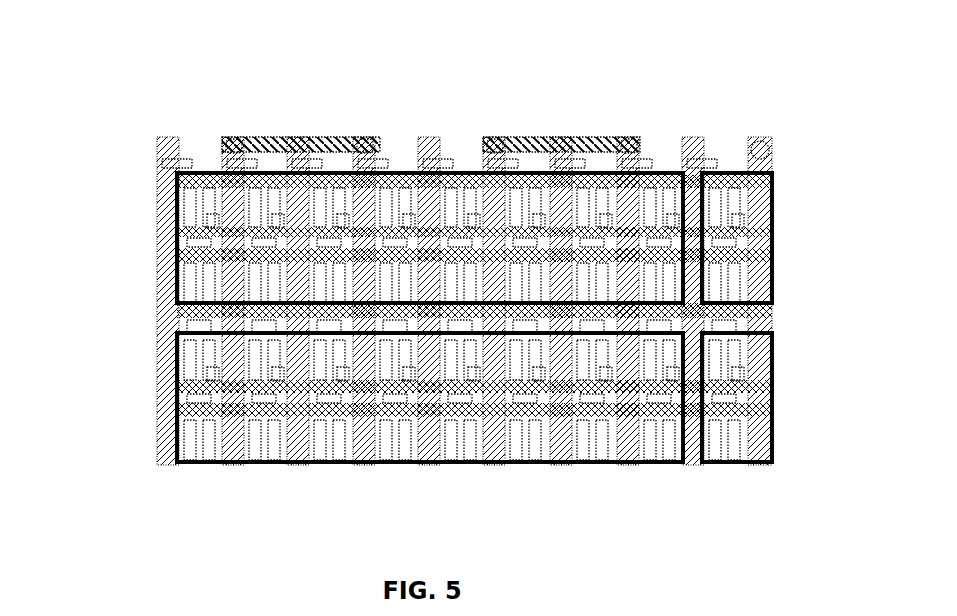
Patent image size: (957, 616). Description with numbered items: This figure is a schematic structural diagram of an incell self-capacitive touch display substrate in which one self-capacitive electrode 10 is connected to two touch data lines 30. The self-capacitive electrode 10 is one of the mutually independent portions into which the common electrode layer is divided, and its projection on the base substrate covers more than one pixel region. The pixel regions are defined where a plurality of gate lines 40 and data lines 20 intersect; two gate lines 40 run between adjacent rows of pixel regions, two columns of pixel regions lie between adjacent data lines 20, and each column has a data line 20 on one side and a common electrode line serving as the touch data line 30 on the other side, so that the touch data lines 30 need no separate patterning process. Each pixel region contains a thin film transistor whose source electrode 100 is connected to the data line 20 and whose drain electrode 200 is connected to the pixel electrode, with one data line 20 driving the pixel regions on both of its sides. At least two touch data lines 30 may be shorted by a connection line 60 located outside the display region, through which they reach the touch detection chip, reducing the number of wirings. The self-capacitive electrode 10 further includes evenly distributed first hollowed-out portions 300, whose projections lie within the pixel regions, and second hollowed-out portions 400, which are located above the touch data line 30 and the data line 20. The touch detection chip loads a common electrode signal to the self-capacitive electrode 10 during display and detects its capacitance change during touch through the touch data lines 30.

The self-capacitive electrode 10 is at (262, 465).
The data line 20 is at (182, 137).
The touch data line 30 is at (247, 140).
The gate line 40 is at (153, 377).
The connection line 60 is at (270, 135).
The source electrode 100 is at (163, 268).
The drain electrode 200 is at (153, 210).
The first hollowed-out portion 300 is at (750, 207).
The second hollowed-out portion 400 is at (772, 278).